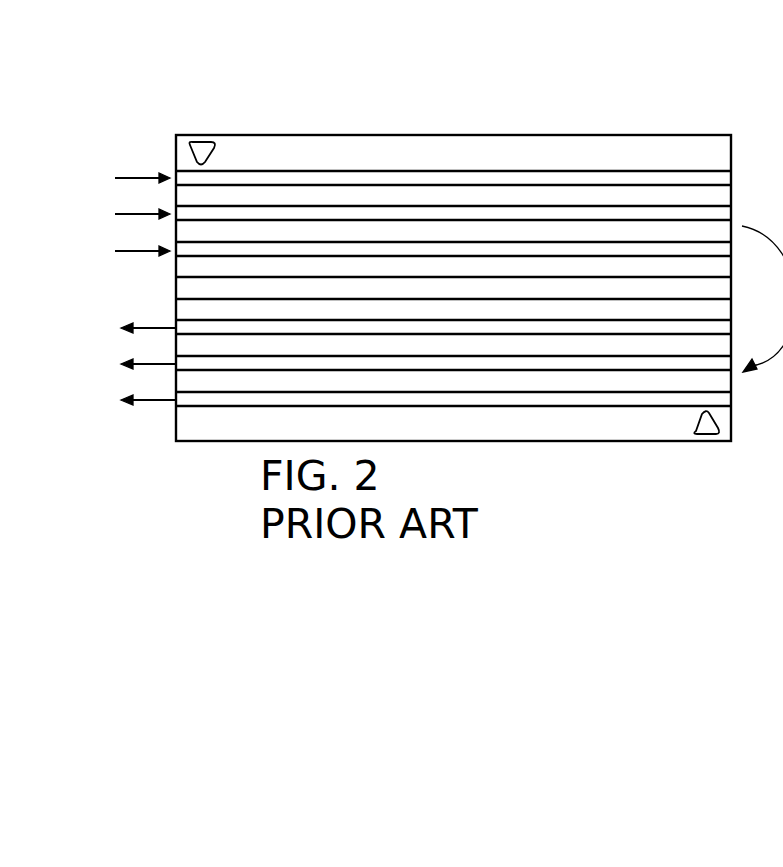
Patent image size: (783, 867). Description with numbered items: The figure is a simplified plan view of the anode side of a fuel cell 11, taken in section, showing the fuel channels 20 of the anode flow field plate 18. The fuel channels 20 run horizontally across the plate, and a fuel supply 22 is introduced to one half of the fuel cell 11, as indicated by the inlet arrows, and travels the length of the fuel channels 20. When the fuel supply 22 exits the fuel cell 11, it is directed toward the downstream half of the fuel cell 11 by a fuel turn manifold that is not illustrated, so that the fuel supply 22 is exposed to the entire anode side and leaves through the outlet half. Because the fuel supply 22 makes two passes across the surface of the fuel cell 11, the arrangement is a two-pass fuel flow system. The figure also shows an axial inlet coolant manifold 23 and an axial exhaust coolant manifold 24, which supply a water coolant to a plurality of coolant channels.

The fuel cell 11 is at (137, 110).
The anode flow field plate 18 is at (637, 152).
The fuel channels 20 is at (417, 177).
The fuel supply 22 is at (142, 176).
The inlet coolant manifold 23 is at (199, 152).
The exhaust coolant manifold 24 is at (706, 423).